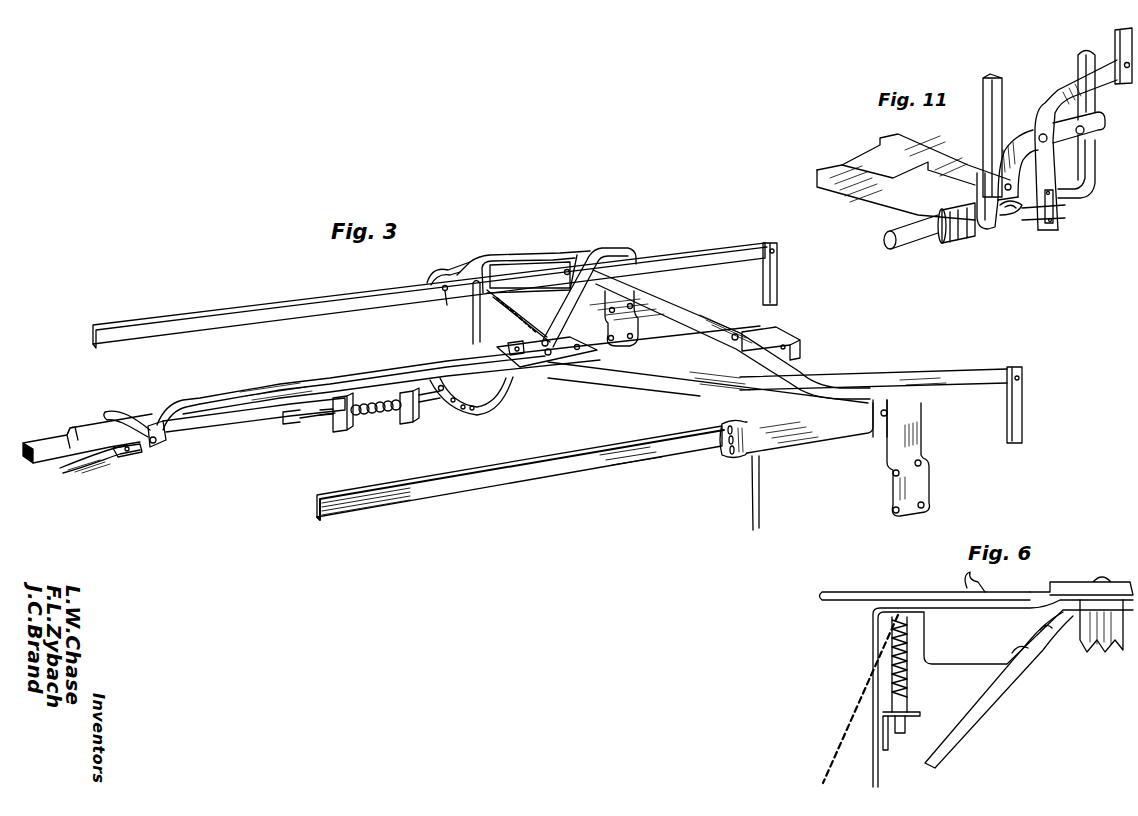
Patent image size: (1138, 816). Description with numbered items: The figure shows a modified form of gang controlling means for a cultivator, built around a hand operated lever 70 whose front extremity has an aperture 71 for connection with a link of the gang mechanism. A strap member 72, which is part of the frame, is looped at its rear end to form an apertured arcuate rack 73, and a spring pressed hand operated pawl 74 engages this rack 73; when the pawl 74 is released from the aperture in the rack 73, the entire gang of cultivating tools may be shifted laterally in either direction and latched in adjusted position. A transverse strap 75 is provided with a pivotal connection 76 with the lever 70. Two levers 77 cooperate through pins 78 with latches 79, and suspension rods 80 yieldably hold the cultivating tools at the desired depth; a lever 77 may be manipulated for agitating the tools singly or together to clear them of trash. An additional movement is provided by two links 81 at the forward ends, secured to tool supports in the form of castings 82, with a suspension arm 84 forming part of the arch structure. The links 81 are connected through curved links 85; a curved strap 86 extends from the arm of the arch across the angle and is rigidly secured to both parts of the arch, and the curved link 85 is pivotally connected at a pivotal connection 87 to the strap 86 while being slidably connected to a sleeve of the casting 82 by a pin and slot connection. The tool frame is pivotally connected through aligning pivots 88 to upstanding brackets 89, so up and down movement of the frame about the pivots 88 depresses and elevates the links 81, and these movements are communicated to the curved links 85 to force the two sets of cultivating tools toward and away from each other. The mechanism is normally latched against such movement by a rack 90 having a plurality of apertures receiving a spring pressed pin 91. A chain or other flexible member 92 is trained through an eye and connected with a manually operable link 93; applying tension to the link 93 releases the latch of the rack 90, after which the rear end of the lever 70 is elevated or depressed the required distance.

In FIG. 3, the lever 70 is at (103, 435).
In FIG. 3, the aperture 71 is at (800, 352).
In FIG. 3, the strap member 72 is at (665, 380).
In FIG. 3, the apertured arcuate rack 73 is at (462, 414).
In FIG. 3, the spring pressed hand operated pawl 74 is at (312, 424).
In FIG. 3, the transverse strap 75 is at (706, 304).
In FIG. 3, the pivotal connection 76 is at (736, 333).
In FIG. 3, the levers 77 is at (279, 312).
In FIG. 3, the pins 78 is at (450, 313).
In FIG. 3, the latches 79 is at (438, 268).
In FIG. 3, the suspension rods 80 is at (478, 308).
In FIG. 3, the links 81 is at (776, 280).
In FIG. 11, the links 81 is at (1122, 40).
In FIG. 11, the castings 82 is at (877, 188).
In FIG. 11, the suspension arm 84 is at (993, 137).
In FIG. 11, the curved links 85 is at (1063, 92).
In FIG. 11, the curved strap 86 is at (1020, 147).
In FIG. 11, the pivotal connection 87 is at (1047, 141).
In FIG. 3, the aligning pivots 88 is at (590, 254).
In FIG. 3, the upstanding brackets 89 is at (626, 320).
In FIG. 3, the rack 90 is at (502, 272).
In FIG. 6, the rack 90 is at (953, 593).
In FIG. 6, the spring pressed pin 91 is at (906, 728).
In FIG. 3, the chain or other flexible member 92 is at (517, 323).
In FIG. 6, the chain or other flexible member 92 is at (862, 689).
In FIG. 3, the link 93 is at (394, 381).